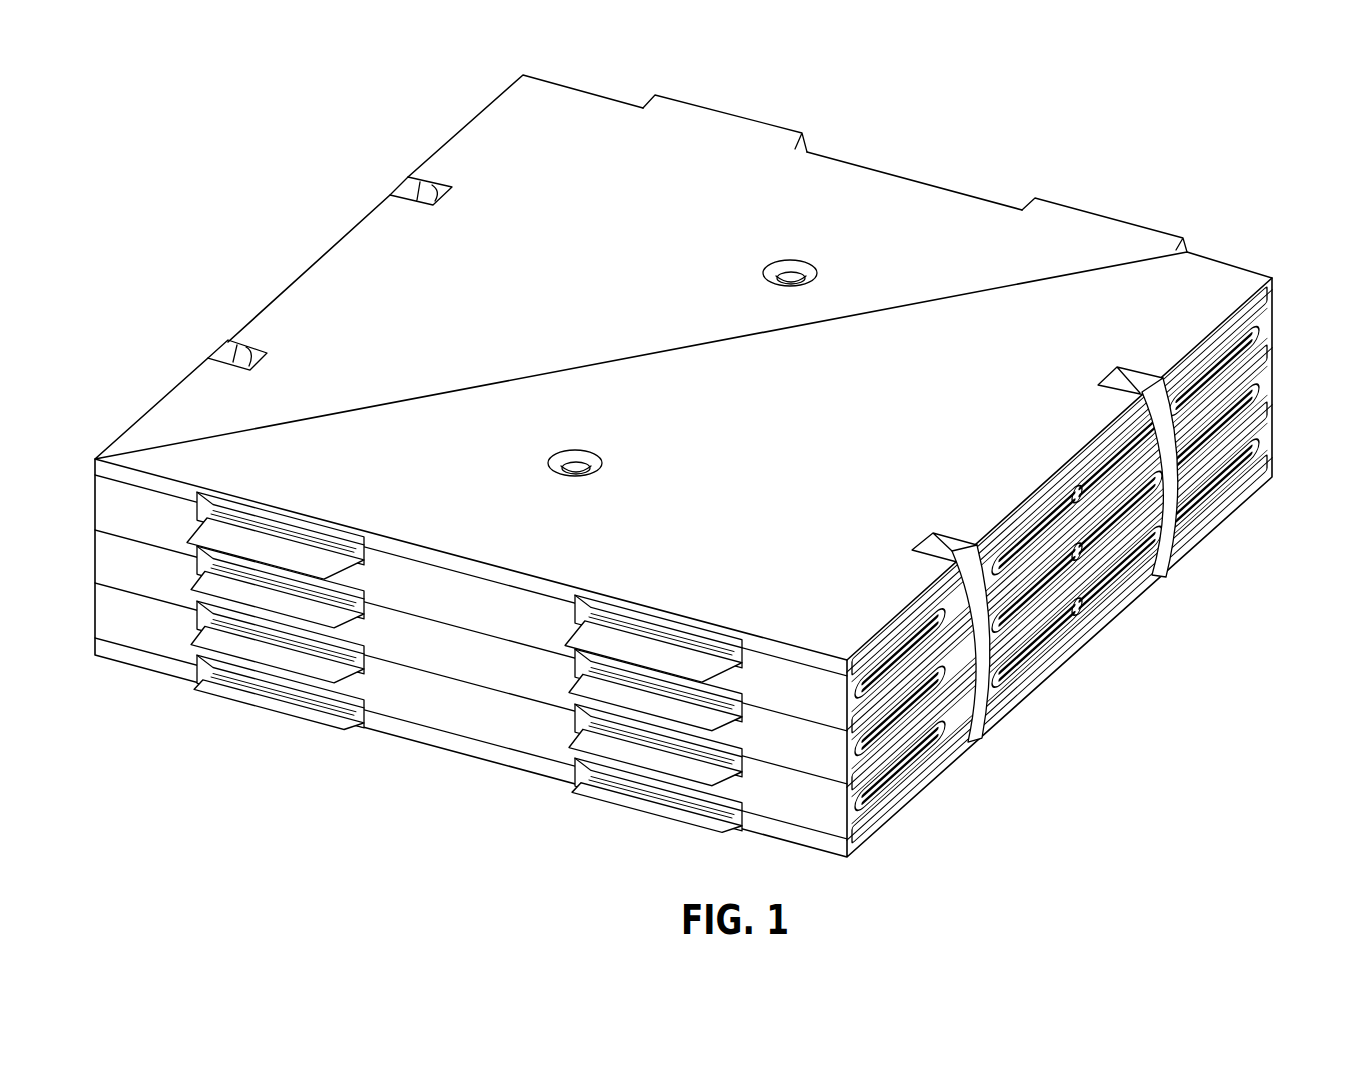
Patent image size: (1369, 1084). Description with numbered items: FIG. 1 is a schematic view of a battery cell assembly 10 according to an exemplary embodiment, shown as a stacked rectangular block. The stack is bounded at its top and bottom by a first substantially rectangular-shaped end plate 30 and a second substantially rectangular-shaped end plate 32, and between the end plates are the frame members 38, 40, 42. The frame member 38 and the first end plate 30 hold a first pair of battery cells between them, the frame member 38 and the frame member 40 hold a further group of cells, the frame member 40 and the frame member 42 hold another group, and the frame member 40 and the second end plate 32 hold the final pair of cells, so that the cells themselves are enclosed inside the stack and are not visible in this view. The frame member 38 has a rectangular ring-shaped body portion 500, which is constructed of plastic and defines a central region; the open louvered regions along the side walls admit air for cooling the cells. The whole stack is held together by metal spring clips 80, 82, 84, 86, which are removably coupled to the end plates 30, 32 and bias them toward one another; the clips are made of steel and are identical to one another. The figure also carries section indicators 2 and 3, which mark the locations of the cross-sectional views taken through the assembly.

The battery cell assembly 10 is at (1000, 158).
The first substantially rectangular-shaped end plate 30 is at (1225, 288).
The second substantially rectangular-shaped end plate 32 is at (1238, 500).
The frame member 38 is at (1272, 328).
The frame member 40 is at (1272, 381).
The frame member 42 is at (1272, 433).
The metal spring clip 80 is at (229, 355).
The metal spring clip 82 is at (968, 745).
The metal spring clip 84 is at (414, 192).
The metal spring clip 86 is at (1162, 582).
The rectangular ring-shaped body portion 500 is at (110, 502).
The section line 2 is at (198, 346).
The section line 3 is at (383, 180).